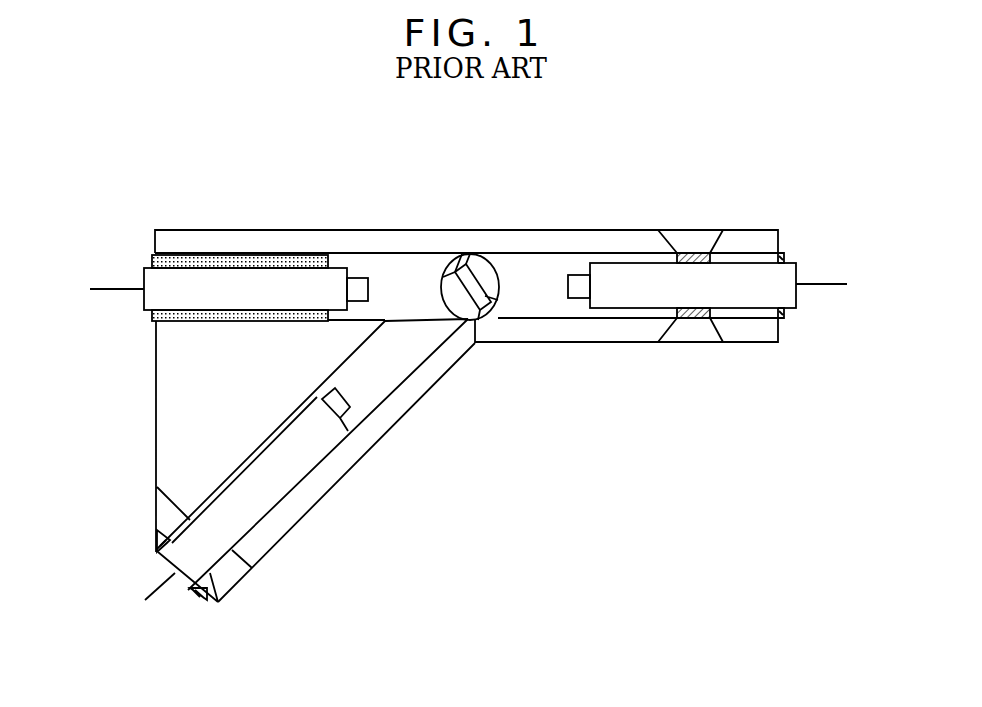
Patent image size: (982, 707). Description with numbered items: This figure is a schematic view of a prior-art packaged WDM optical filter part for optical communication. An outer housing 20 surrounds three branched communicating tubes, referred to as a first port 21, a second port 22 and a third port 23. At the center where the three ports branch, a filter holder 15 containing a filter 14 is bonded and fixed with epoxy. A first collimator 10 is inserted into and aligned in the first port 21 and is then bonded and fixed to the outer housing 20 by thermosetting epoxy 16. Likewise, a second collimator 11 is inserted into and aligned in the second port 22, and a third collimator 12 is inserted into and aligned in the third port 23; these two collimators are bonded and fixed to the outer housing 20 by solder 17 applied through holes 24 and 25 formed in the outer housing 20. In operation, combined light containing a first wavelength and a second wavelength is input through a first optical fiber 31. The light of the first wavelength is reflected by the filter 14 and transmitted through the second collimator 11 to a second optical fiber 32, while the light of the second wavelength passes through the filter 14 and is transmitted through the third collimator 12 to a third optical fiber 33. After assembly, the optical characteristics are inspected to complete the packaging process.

The first collimator 10 is at (157, 299).
The second collimator 11 is at (230, 528).
The third collimator 12 is at (739, 273).
The filter 14 is at (478, 302).
The filter holder 15 is at (458, 262).
The thermosetting epoxy 16 is at (218, 262).
The solder 17 is at (790, 252).
The outer housing 20 is at (588, 333).
The first port 21 is at (365, 262).
The second port 22 is at (380, 373).
The third port 23 is at (611, 253).
The hole 24 is at (163, 503).
The hole 25 is at (695, 330).
The first optical fiber 31 is at (117, 288).
The second optical fiber 32 is at (158, 587).
The third optical fiber 33 is at (823, 286).